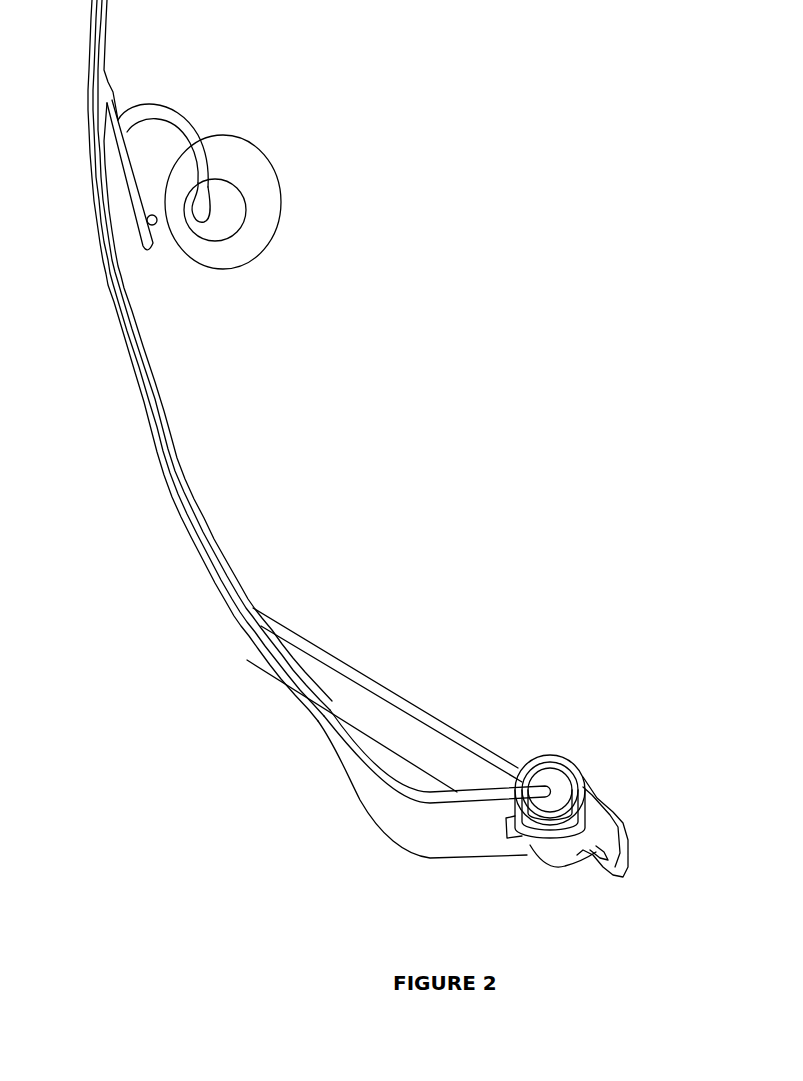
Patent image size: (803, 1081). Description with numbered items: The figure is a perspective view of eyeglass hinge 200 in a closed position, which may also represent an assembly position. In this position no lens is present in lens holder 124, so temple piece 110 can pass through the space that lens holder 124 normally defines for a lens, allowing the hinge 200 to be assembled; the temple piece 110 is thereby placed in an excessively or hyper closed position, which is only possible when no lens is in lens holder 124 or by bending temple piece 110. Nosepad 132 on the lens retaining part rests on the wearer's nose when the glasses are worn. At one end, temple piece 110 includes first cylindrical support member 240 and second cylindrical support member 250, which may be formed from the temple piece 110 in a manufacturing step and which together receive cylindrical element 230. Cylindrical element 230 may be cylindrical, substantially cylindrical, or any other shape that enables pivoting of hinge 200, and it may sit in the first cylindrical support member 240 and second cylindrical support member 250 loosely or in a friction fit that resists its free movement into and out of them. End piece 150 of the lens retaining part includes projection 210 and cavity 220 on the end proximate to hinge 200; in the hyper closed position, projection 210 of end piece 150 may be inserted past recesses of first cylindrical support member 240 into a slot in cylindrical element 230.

The temple piece 110 is at (360, 693).
The lens holder 124 is at (163, 473).
The nosepad 132 is at (237, 248).
The end piece 150 is at (398, 815).
The eyeglass hinge 200 is at (578, 792).
The projection 210 is at (520, 785).
The cavity 220 is at (510, 834).
The cylindrical element 230 is at (560, 778).
The first cylindrical support member 240 is at (562, 845).
The second cylindrical support member 250 is at (588, 780).